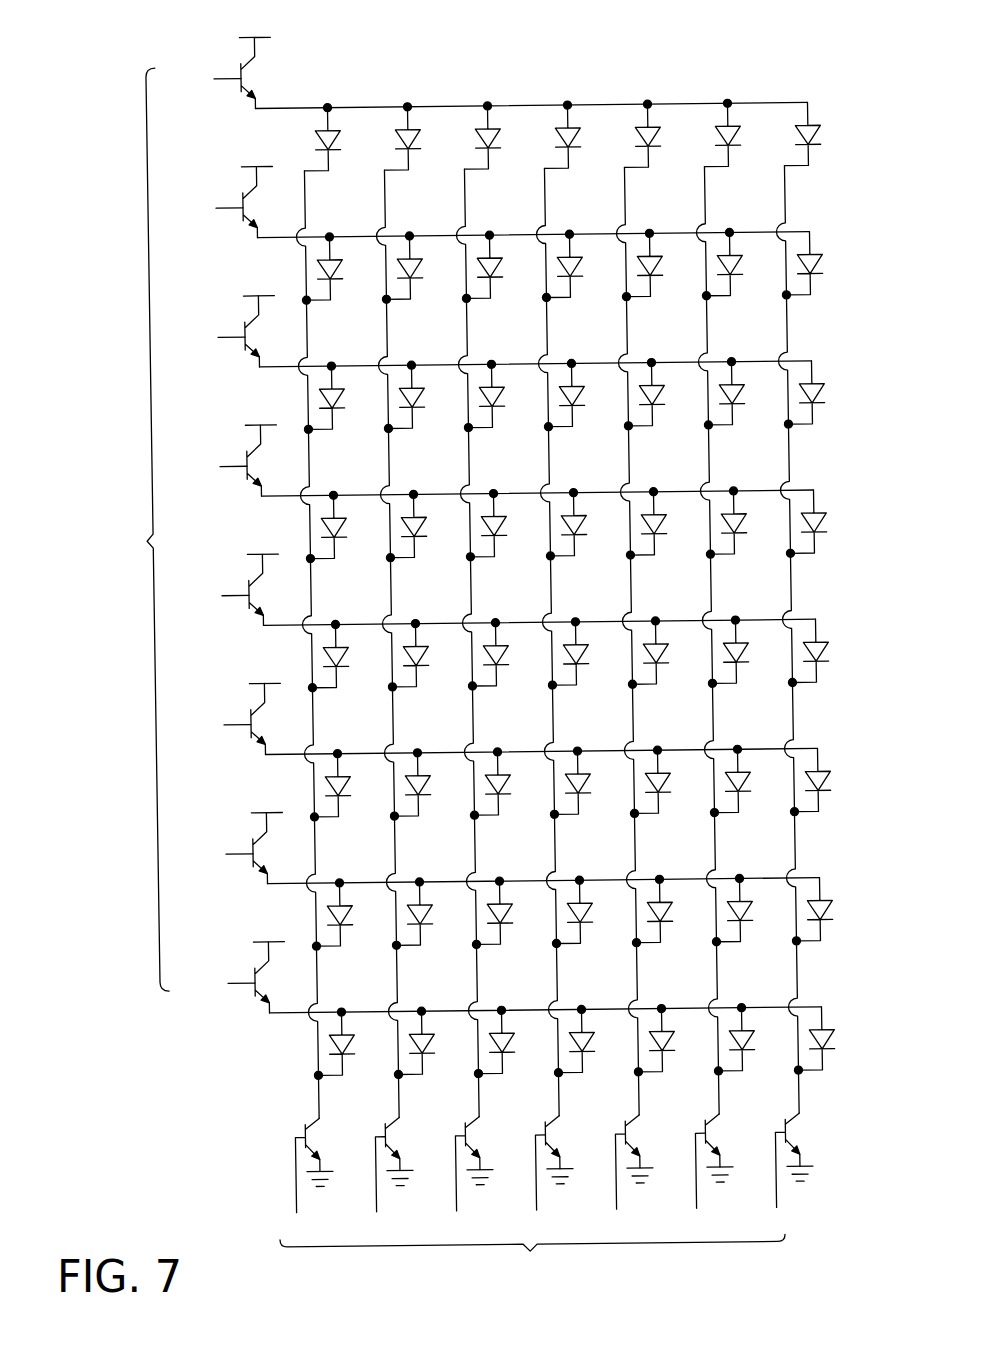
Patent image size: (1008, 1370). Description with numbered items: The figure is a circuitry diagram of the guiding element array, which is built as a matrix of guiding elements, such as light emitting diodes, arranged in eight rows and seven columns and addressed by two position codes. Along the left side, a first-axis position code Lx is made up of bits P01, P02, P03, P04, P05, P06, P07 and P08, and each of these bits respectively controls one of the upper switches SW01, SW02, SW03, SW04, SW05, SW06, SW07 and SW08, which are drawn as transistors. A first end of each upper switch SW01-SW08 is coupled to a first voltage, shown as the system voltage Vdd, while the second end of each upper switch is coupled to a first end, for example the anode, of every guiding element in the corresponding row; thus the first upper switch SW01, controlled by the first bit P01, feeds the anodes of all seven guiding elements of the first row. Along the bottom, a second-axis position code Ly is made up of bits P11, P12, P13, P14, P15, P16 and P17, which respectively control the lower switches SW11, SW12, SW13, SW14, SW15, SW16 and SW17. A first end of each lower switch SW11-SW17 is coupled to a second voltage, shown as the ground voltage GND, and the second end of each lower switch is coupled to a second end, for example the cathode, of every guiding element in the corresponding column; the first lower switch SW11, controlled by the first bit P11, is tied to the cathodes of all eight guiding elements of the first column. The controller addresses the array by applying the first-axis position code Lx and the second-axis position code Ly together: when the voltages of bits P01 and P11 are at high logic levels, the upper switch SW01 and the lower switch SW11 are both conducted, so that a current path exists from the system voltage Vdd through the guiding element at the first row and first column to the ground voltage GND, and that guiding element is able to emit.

The system voltage Vdd is at (261, 478).
The first bit of the first-axis position code P01 is at (209, 79).
The bit of the first-axis position code P02 is at (211, 208).
The bit of the first-axis position code P03 is at (213, 337).
The bit of the first-axis position code P04 is at (215, 466).
The bit of the first-axis position code P05 is at (217, 595).
The bit of the first-axis position code P06 is at (219, 725).
The bit of the first-axis position code P07 is at (221, 854).
The bit of the first-axis position code P08 is at (223, 983).
The first upper switch SW01 is at (229, 81).
The upper switch SW02 is at (231, 211).
The upper switch SW03 is at (233, 340).
The upper switch SW04 is at (235, 469).
The upper switch SW05 is at (237, 598).
The upper switch SW06 is at (239, 727).
The upper switch SW07 is at (241, 857).
The upper switch SW08 is at (243, 986).
The first lower switch SW11 is at (332, 1145).
The lower switch SW12 is at (412, 1144).
The lower switch SW13 is at (492, 1143).
The lower switch SW14 is at (572, 1142).
The lower switch SW15 is at (652, 1142).
The lower switch SW16 is at (732, 1141).
The lower switch SW17 is at (812, 1140).
The first bit of the second-axis position code P11 is at (296, 1187).
The bit of the second-axis position code P12 is at (376, 1186).
The bit of the second-axis position code P13 is at (456, 1185).
The bit of the second-axis position code P14 is at (536, 1184).
The bit of the second-axis position code P15 is at (616, 1183).
The bit of the second-axis position code P16 is at (696, 1182).
The bit of the second-axis position code P17 is at (776, 1181).
The ground voltage GND is at (560, 1189).
The first-axis position code Lx is at (141, 529).
The second-axis position code Ly is at (533, 1259).